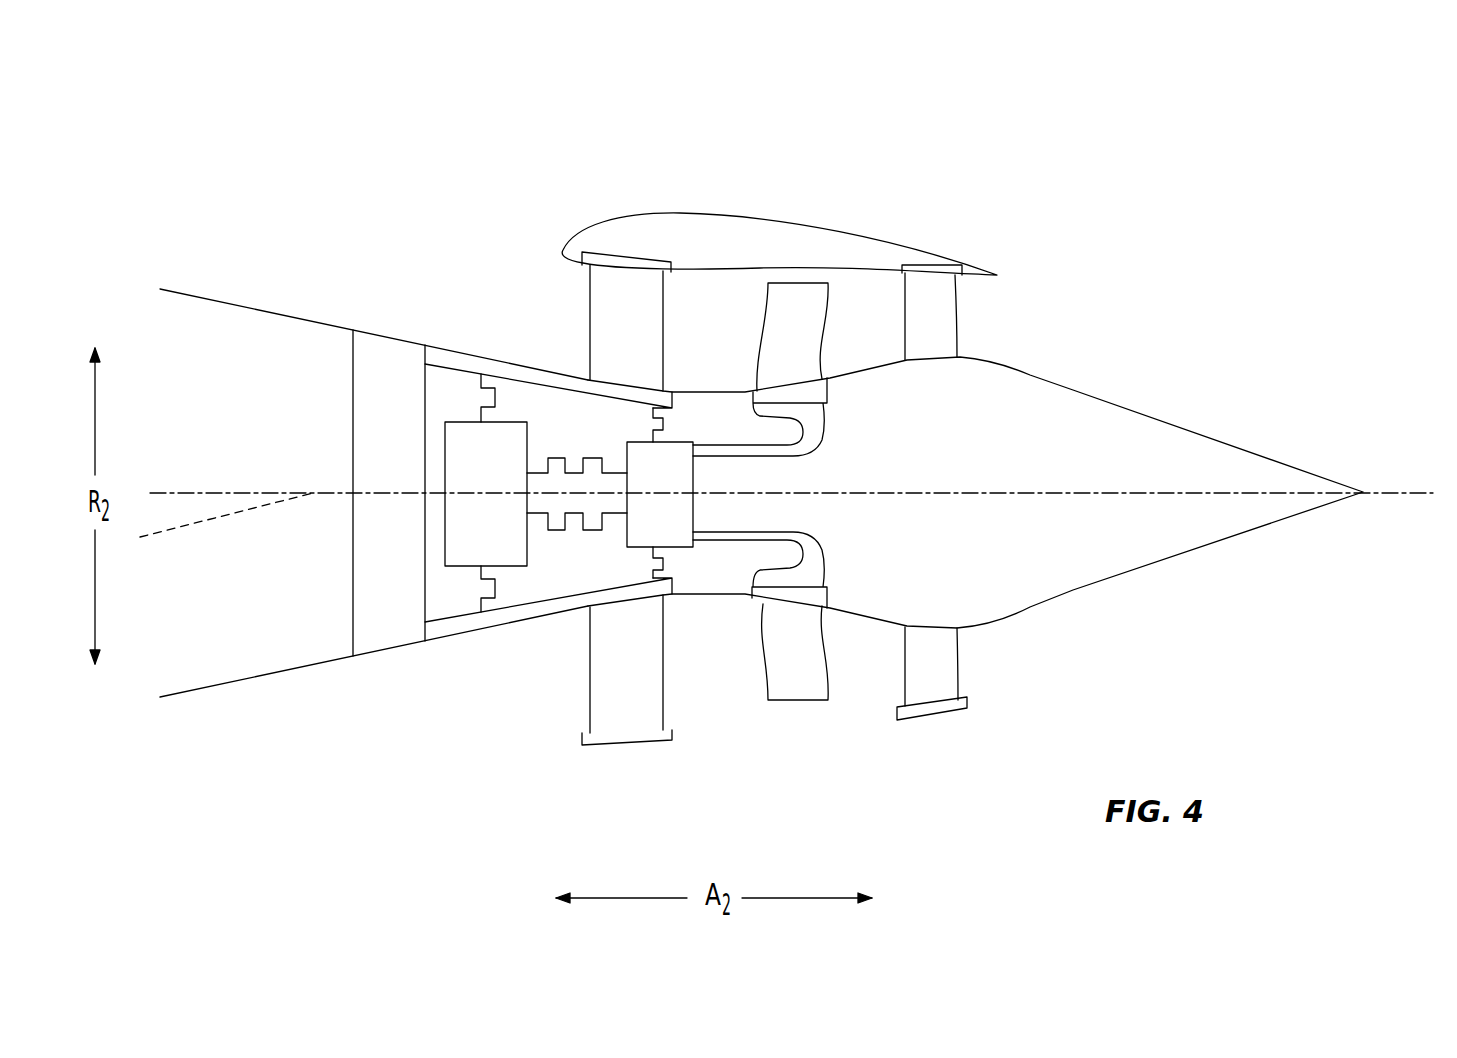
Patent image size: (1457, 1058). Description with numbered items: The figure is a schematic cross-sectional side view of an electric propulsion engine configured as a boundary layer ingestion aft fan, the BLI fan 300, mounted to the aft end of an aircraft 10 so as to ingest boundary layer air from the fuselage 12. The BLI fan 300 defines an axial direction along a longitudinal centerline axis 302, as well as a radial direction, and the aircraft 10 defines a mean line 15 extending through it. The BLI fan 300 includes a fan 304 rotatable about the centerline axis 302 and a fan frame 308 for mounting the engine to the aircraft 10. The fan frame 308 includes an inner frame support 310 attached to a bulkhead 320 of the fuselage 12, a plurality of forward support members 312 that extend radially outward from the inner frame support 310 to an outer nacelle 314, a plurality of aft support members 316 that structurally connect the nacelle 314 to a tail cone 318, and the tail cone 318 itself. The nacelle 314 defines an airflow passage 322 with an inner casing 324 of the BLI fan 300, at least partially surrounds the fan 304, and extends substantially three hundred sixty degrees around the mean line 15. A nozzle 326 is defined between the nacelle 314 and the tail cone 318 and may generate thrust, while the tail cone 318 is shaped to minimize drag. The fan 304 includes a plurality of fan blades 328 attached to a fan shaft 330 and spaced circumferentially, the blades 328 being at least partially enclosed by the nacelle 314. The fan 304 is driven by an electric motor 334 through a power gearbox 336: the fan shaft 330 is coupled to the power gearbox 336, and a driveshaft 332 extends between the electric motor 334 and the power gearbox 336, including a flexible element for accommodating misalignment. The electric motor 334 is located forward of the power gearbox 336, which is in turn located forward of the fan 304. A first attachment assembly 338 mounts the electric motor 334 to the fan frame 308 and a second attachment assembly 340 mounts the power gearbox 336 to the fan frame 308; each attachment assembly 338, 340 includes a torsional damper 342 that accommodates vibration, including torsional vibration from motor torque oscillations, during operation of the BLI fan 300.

The aircraft 10 is at (279, 246).
The fuselage 12 is at (215, 687).
The mean line 15 is at (177, 535).
The BLI fan 300 is at (1055, 138).
The longitudinal centerline axis 302 is at (1395, 488).
The fan 304 is at (858, 310).
The fan frame 308 is at (547, 320).
The inner frame support 310 is at (507, 362).
The forward support members 312 is at (618, 283).
The outer nacelle 314 is at (692, 210).
The aft support members 316 is at (933, 287).
The tail cone 318 is at (1228, 440).
The bulkhead 320 is at (357, 401).
The airflow passage 322 is at (711, 308).
The inner casing 324 is at (748, 398).
The nozzle 326 is at (992, 312).
The fan blades 328 is at (803, 685).
The fan shaft 330 is at (777, 447).
The driveshaft 332 is at (578, 514).
The electric motor 334 is at (473, 553).
The power gearbox 336 is at (678, 515).
The first attachment assembly 338 is at (467, 390).
The second attachment assembly 340 is at (647, 566).
The torsional damper 342 is at (505, 400).